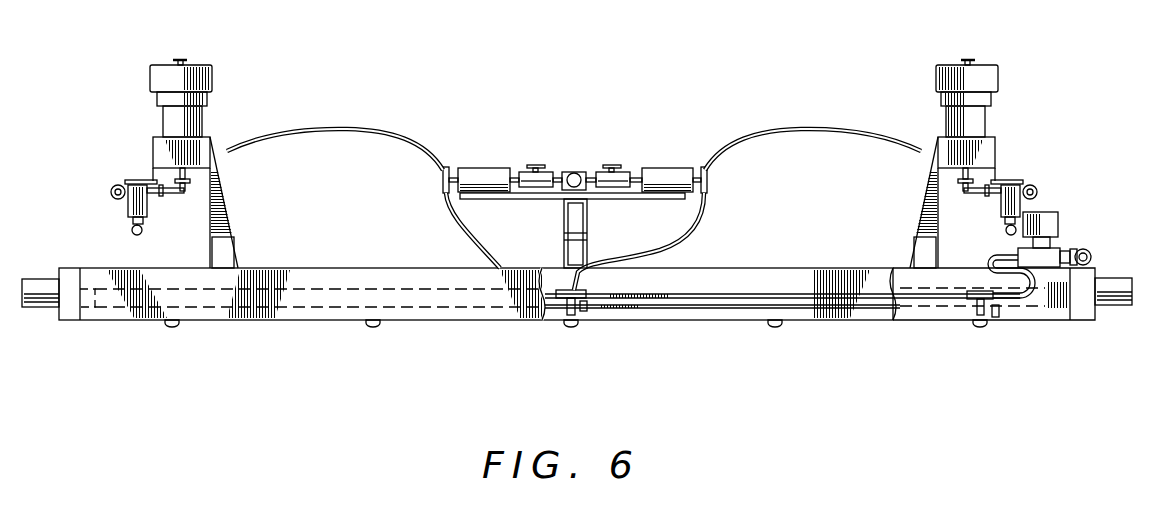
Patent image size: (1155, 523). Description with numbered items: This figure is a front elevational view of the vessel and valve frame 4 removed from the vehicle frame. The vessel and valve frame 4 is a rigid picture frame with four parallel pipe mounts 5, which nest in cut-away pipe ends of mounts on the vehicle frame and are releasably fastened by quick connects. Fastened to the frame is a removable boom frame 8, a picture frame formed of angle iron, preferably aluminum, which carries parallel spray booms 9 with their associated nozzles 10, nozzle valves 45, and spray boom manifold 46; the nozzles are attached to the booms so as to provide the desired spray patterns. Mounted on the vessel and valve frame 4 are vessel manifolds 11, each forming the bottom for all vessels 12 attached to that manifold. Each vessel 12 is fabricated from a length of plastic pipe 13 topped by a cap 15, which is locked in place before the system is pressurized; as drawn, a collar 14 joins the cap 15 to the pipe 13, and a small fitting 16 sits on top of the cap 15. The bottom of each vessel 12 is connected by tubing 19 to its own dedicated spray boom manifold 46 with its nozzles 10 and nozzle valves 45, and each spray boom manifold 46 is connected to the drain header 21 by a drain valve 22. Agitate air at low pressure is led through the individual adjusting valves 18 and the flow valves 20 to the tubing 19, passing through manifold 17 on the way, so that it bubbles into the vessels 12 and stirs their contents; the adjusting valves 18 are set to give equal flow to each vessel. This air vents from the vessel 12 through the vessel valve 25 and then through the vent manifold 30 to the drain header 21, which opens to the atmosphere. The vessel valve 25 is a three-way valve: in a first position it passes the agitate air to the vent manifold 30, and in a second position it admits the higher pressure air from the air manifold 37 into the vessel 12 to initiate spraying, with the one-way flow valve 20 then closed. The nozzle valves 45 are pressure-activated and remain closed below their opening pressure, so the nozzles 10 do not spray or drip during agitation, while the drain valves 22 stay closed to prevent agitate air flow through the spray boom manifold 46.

The vessel and valve frame 4 is at (310, 334).
The pipe mounts 5 is at (40, 277).
The boom frame 8 is at (1062, 321).
The spray booms 9 is at (916, 308).
The nozzles 10 is at (170, 328).
The vessel manifold 11 is at (200, 152).
The vessel 12 is at (162, 155).
The plastic pipe 13 is at (163, 124).
The collar 14 is at (157, 98).
The cap 15 is at (214, 68).
The knob 16 is at (186, 57).
The manifold 17 is at (575, 171).
The adjusting valve 18 is at (533, 171).
The tubing 19 is at (420, 150).
The flow valve 20 is at (490, 171).
The drain header 21 is at (1091, 258).
The drain valve 22 is at (1057, 216).
The vessel valve 25 is at (128, 203).
The vent manifold 30 is at (111, 191).
The air manifold 37 is at (142, 234).
The nozzle valve 45 is at (995, 320).
The spray boom manifold 46 is at (650, 300).